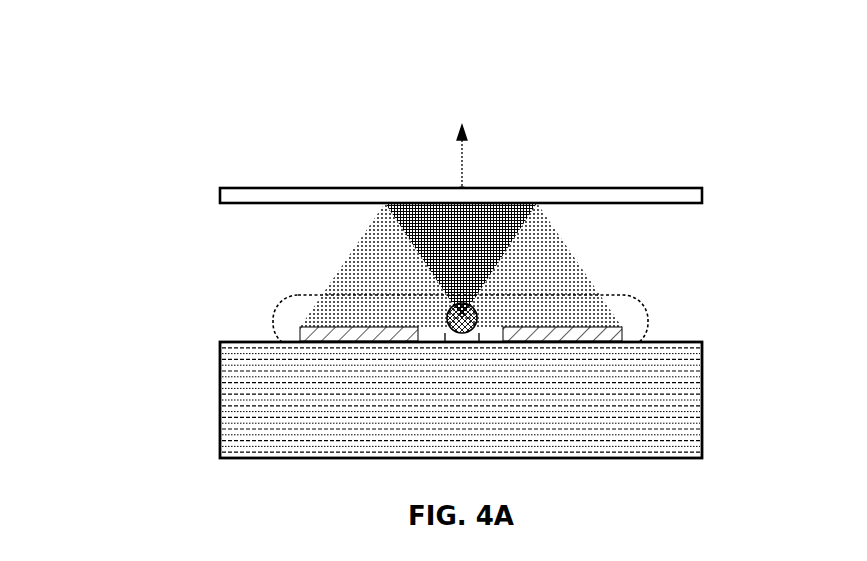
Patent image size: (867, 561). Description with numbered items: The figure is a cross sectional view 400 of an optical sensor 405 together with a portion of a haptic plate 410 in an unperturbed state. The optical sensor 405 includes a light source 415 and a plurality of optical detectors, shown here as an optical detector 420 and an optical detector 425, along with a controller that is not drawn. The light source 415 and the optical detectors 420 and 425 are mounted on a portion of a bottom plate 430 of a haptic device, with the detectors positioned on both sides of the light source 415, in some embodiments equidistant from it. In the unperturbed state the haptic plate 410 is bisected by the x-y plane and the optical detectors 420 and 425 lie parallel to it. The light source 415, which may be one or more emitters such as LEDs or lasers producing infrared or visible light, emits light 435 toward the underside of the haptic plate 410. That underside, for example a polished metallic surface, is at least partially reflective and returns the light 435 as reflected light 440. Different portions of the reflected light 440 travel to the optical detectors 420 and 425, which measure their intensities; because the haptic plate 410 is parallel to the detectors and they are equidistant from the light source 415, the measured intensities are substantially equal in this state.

The cross sectional view 400 is at (470, 43).
The optical sensor 405 is at (645, 307).
The haptic plate 410 is at (220, 198).
The light source 415 is at (447, 320).
The optical detector 420 is at (300, 330).
The optical detector 425 is at (627, 336).
The bottom plate 430 is at (220, 400).
The light 435 is at (490, 290).
The reflected light 440 is at (350, 267).